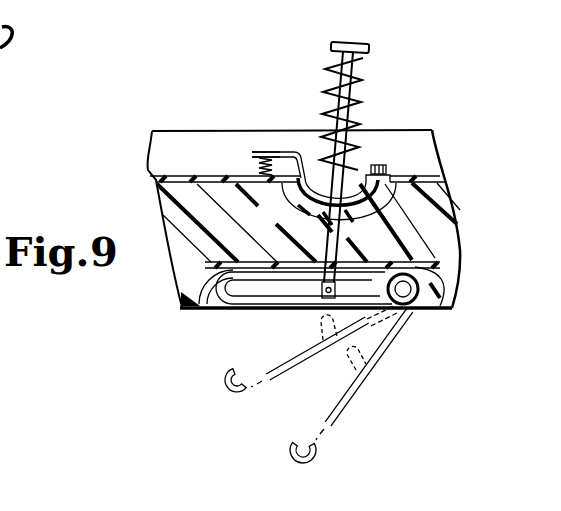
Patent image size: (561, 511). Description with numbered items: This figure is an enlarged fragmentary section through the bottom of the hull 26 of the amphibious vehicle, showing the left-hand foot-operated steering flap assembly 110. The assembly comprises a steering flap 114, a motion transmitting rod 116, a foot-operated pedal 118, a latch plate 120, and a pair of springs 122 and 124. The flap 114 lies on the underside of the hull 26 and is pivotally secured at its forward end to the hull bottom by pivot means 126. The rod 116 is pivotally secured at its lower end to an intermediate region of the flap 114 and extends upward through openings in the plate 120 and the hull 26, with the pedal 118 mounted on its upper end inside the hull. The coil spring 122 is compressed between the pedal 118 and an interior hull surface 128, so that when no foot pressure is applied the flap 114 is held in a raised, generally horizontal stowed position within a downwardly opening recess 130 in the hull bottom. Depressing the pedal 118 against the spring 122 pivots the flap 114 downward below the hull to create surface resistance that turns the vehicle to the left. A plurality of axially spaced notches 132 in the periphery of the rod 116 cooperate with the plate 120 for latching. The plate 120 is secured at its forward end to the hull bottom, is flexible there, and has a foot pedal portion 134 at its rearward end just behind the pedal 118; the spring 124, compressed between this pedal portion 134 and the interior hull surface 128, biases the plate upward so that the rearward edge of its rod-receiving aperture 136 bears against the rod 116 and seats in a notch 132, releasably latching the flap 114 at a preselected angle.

The hull 26 is at (195, 308).
The flap assembly 110 is at (310, 100).
The steering flap 114 is at (236, 307).
The motion transmitting rod 116 is at (342, 114).
The foot-operated pedal 118 is at (353, 43).
The latch plate 120 is at (302, 168).
The spring 122 is at (362, 74).
The spring 124 is at (258, 162).
The pivot means 126 is at (404, 291).
The interior hull surface 128 is at (408, 168).
The recess 130 is at (270, 274).
The notches 132 is at (298, 192).
The foot pedal portion 134 is at (262, 150).
The rod-receiving aperture 136 is at (357, 172).